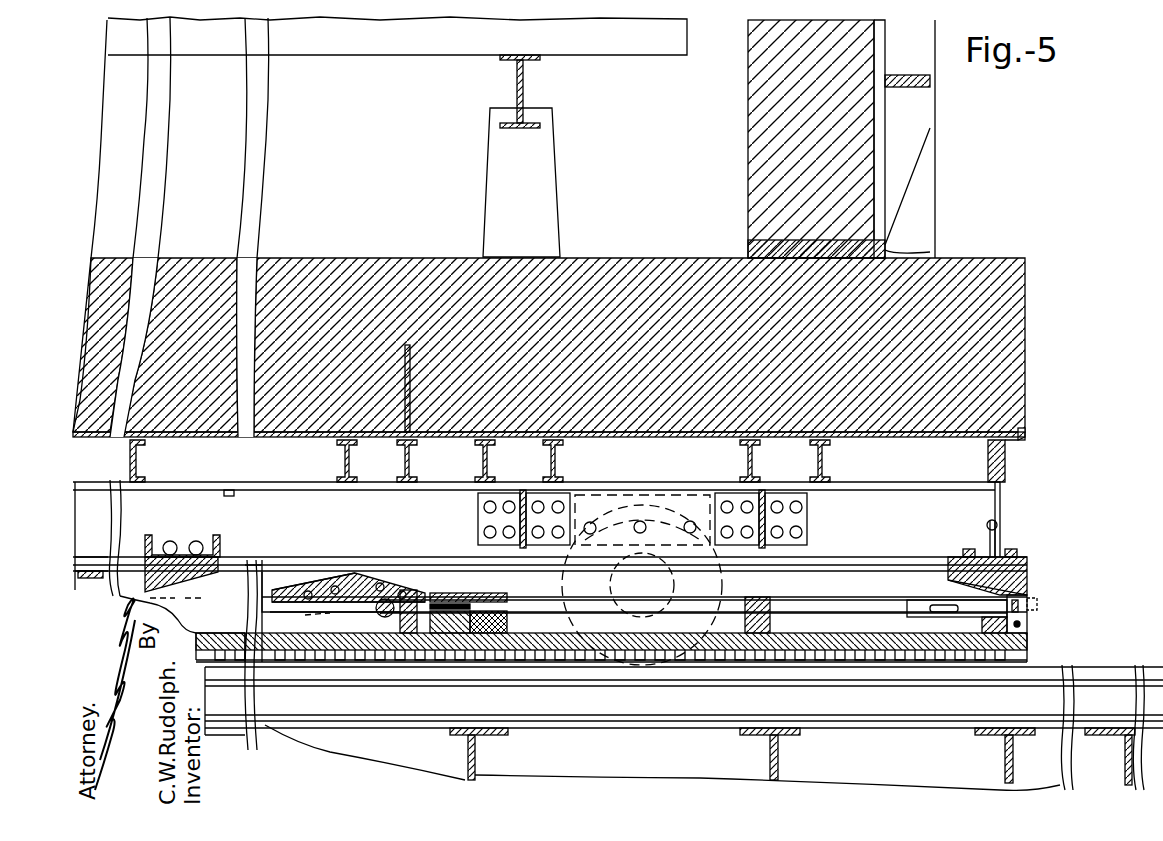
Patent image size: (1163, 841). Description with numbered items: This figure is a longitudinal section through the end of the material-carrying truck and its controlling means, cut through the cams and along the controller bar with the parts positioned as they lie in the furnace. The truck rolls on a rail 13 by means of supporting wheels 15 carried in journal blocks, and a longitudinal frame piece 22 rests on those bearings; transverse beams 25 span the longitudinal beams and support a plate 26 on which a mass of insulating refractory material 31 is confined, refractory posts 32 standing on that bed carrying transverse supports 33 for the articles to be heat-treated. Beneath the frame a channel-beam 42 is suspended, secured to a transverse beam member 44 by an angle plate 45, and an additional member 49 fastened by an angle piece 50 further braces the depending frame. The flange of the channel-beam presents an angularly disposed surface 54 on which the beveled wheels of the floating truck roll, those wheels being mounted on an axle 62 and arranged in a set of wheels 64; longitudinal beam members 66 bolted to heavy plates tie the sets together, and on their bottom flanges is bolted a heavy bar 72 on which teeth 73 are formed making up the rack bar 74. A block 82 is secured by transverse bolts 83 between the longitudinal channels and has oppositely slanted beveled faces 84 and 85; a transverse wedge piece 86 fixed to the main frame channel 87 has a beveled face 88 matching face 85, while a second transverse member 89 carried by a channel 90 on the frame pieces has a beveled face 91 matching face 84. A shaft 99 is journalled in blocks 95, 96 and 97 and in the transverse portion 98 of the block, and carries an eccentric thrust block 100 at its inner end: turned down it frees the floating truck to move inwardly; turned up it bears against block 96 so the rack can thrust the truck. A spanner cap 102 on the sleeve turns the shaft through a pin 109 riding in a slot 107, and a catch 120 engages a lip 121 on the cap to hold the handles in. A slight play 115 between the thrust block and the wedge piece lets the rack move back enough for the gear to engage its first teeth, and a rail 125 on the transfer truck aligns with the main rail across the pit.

The rail 13 is at (706, 722).
The supporting wheel 15 is at (640, 670).
The longitudinal frame piece 22 is at (90, 494).
The transverse beam 25 is at (340, 460).
The plate 26 is at (925, 445).
The insulating refractory material 31 is at (630, 270).
The post 32 is at (548, 178).
The transverse support 33 is at (524, 90).
The channel-beam 42 is at (855, 565).
The transverse beam member 44 is at (514, 490).
The angle plate 45 is at (576, 493).
The additional member 49 is at (985, 550).
The angle piece 50 is at (182, 628).
The angularly disposed surface 54 is at (835, 566).
The axle 62 is at (383, 620).
The set of wheels 64 is at (331, 599).
The longitudinal beam member 66 is at (880, 572).
The heavy bar 72 is at (790, 662).
The teeth 73 is at (878, 662).
The rack bar 74 is at (1028, 645).
The block 82 is at (345, 574).
The transverse bolt 83 is at (306, 590).
The beveled face 84 is at (318, 578).
The beveled face 85 is at (410, 590).
The transverse wedge piece 86 is at (1027, 563).
The main frame channel 87 is at (997, 520).
The beveled face 88 is at (1027, 582).
The second transverse member 89 is at (185, 549).
The channel 90 is at (155, 540).
The beveled face 91 is at (196, 592).
The block 95 is at (770, 598).
The block 96 is at (512, 612).
The block 97 is at (990, 640).
The transverse portion 98 is at (420, 633).
The shaft 99 is at (843, 608).
The thrust block 100 is at (438, 597).
The spanner cap 102 is at (1040, 600).
The slot 107 is at (945, 601).
The pin 109 is at (950, 612).
The play 115 is at (438, 593).
The catch 120 is at (1030, 622).
The lip 121 is at (1032, 595).
The rail 125 is at (91, 536).